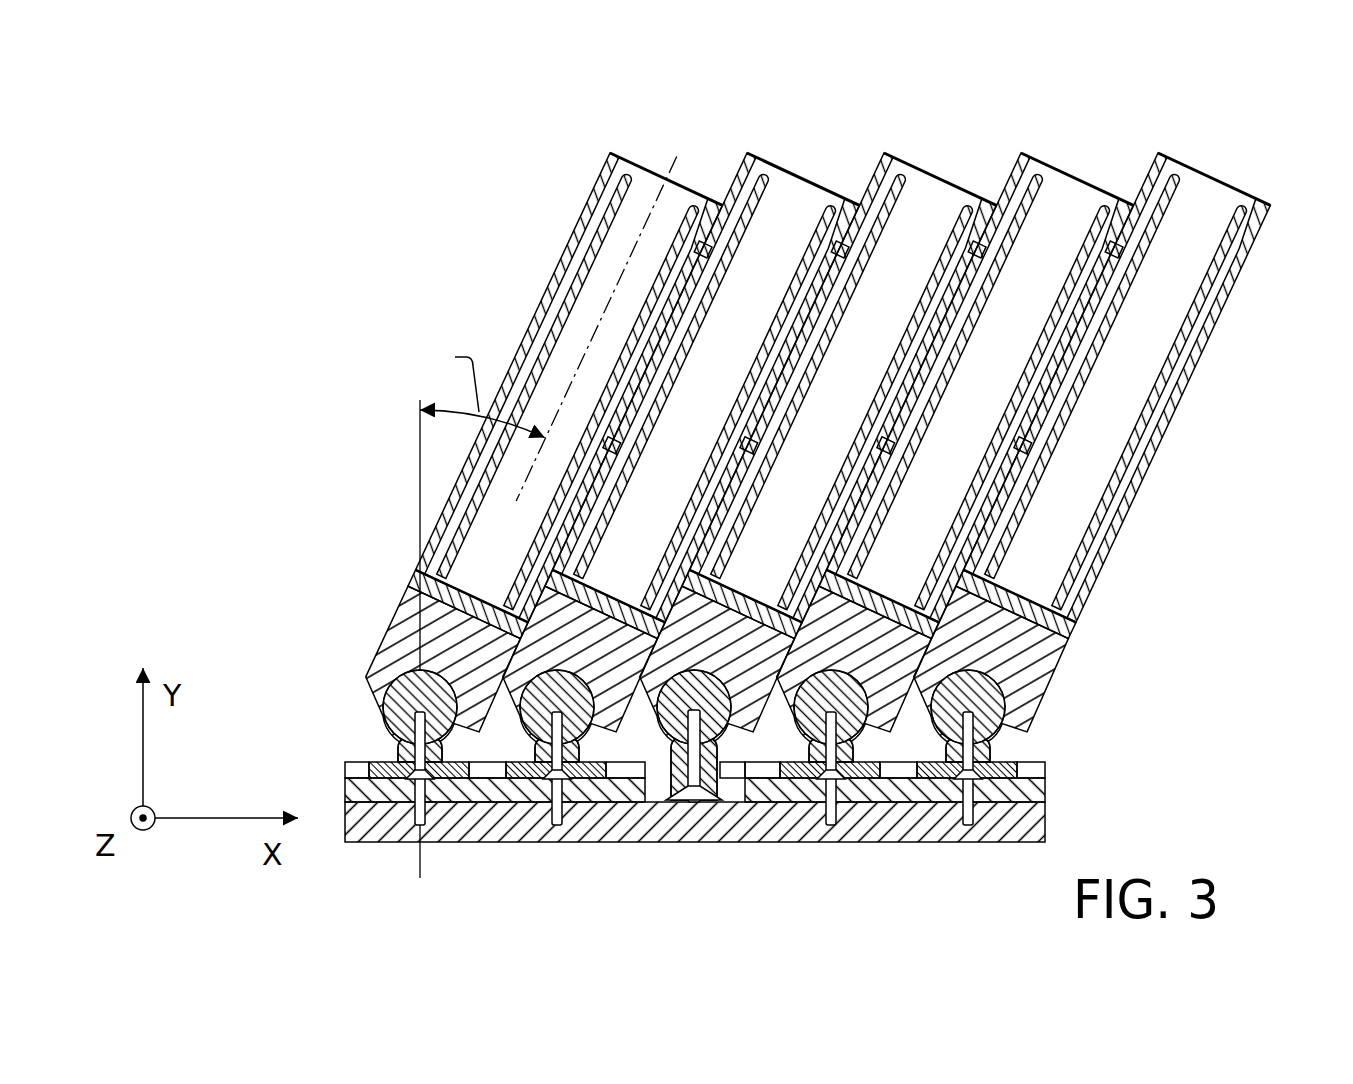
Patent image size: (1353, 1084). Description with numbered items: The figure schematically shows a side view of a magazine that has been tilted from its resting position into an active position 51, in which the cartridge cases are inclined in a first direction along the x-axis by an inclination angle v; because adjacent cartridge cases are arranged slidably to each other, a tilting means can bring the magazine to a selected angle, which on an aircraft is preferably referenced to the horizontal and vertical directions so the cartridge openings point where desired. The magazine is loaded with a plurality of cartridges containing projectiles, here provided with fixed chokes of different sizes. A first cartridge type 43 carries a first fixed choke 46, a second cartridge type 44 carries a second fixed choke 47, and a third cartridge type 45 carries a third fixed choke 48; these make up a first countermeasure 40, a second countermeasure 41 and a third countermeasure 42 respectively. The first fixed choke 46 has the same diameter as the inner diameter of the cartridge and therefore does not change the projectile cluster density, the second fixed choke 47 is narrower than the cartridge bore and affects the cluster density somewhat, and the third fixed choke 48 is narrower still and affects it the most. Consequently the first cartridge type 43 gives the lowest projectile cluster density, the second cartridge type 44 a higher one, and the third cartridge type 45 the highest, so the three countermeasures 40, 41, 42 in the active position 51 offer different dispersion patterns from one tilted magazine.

The active position 51 is at (801, 482).
The first countermeasure 40 is at (627, 429).
The second countermeasure 41 is at (833, 429).
The third countermeasure 42 is at (1038, 429).
The first fixed choke 46 is at (637, 332).
The second fixed choke 47 is at (843, 332).
The third fixed choke 48 is at (1048, 332).
The first cartridge type 43 is at (700, 402).
The second cartridge type 44 is at (830, 410).
The third cartridge type 45 is at (990, 372).